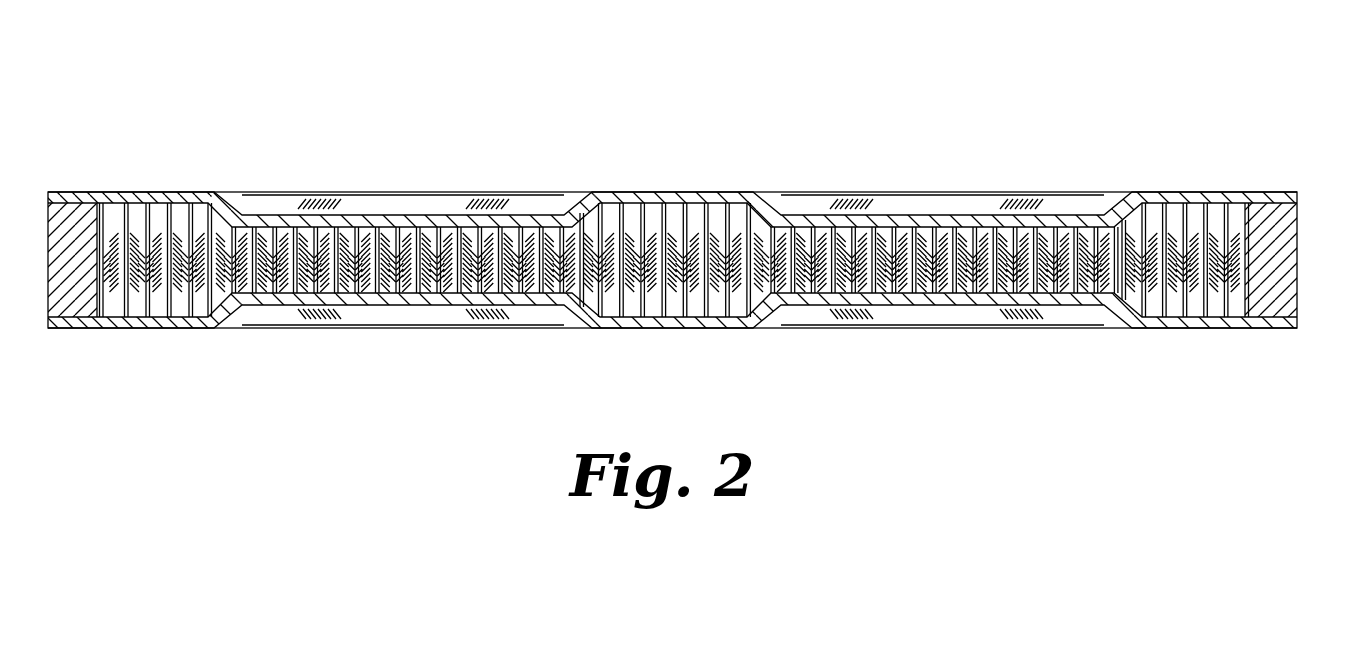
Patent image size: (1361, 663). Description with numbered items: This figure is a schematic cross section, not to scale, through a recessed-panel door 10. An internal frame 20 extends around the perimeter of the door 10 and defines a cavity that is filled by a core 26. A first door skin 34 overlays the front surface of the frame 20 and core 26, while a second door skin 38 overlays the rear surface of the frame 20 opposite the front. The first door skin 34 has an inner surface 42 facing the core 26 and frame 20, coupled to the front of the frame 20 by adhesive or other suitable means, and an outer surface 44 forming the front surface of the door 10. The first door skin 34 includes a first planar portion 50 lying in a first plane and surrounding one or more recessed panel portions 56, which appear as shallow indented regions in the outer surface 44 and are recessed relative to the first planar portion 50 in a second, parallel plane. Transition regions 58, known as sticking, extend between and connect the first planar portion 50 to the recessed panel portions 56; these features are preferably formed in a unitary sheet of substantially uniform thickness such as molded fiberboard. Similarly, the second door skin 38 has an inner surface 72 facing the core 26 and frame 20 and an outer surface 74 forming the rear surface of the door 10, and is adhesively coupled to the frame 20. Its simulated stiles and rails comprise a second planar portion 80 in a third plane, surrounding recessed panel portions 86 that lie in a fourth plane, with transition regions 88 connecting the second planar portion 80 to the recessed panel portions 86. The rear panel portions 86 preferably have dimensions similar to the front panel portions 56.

The door 10 is at (1143, 75).
The internal frame 20 is at (1287, 252).
The core 26 is at (1153, 300).
The first door skin 34 is at (650, 193).
The second door skin 38 is at (573, 307).
The inner surface 42 is at (152, 212).
The outer surface 44 is at (160, 191).
The first planar portion 50 is at (729, 193).
The recessed panel portions 56 is at (382, 217).
The transition regions 58 is at (775, 212).
The inner surface 72 is at (139, 303).
The outer surface 74 is at (162, 329).
The second planar portion 80 is at (683, 318).
The recessed panel portions 86 is at (394, 297).
The transition regions 88 is at (228, 312).